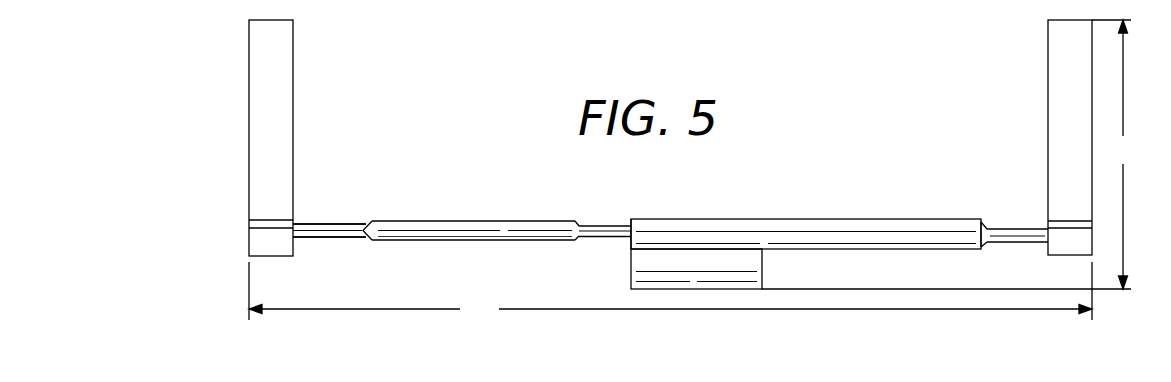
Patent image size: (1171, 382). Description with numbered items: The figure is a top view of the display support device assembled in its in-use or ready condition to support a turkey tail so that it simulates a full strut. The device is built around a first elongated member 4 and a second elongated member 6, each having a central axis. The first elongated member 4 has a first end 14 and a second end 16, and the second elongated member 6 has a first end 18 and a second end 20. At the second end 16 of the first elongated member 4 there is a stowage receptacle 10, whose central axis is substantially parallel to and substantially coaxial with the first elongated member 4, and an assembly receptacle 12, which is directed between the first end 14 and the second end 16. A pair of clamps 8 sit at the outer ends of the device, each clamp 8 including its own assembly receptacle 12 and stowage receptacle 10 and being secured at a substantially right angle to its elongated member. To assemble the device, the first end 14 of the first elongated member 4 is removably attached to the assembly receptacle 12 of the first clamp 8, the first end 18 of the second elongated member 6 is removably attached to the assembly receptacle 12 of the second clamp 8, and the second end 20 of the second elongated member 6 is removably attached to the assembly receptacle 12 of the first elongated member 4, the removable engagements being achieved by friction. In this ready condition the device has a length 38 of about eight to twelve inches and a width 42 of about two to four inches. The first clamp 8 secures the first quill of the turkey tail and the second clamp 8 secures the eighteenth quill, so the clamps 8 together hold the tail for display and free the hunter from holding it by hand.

The first elongated member 4 is at (820, 219).
The second elongated member 6 is at (458, 220).
The clamp 8 is at (293, 65).
The stowage receptacle 10 is at (763, 266).
The assembly receptacle 12 is at (297, 222).
The first end 14 is at (1030, 228).
The second end 16 is at (636, 218).
The first end 18 is at (315, 238).
The second end 20 is at (612, 239).
The length 38 is at (496, 323).
The width 42 is at (1140, 161).